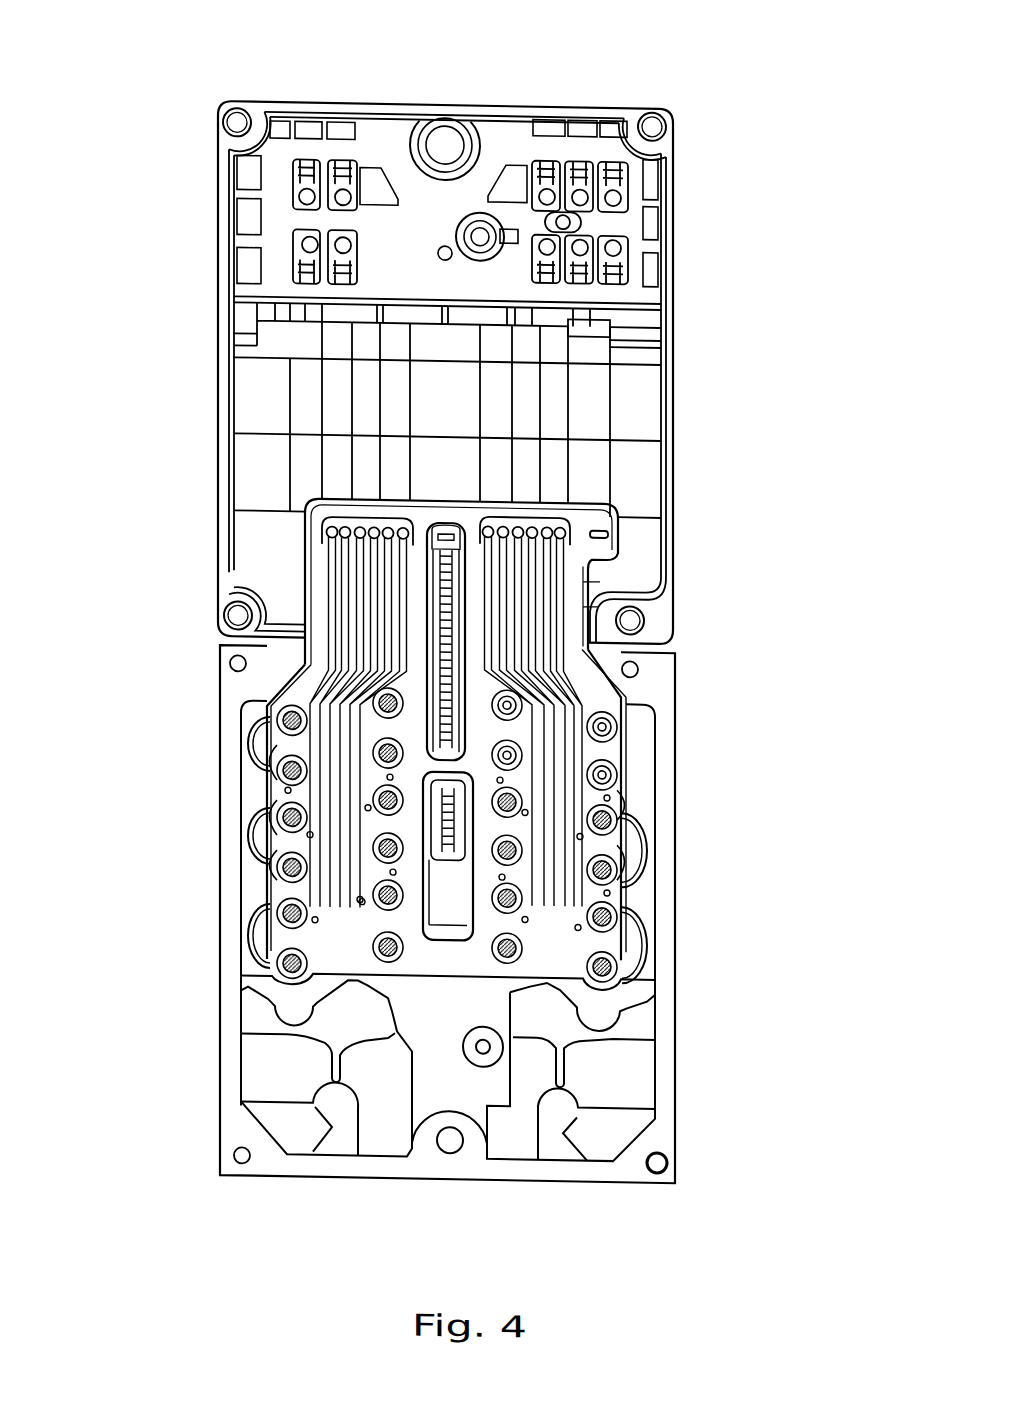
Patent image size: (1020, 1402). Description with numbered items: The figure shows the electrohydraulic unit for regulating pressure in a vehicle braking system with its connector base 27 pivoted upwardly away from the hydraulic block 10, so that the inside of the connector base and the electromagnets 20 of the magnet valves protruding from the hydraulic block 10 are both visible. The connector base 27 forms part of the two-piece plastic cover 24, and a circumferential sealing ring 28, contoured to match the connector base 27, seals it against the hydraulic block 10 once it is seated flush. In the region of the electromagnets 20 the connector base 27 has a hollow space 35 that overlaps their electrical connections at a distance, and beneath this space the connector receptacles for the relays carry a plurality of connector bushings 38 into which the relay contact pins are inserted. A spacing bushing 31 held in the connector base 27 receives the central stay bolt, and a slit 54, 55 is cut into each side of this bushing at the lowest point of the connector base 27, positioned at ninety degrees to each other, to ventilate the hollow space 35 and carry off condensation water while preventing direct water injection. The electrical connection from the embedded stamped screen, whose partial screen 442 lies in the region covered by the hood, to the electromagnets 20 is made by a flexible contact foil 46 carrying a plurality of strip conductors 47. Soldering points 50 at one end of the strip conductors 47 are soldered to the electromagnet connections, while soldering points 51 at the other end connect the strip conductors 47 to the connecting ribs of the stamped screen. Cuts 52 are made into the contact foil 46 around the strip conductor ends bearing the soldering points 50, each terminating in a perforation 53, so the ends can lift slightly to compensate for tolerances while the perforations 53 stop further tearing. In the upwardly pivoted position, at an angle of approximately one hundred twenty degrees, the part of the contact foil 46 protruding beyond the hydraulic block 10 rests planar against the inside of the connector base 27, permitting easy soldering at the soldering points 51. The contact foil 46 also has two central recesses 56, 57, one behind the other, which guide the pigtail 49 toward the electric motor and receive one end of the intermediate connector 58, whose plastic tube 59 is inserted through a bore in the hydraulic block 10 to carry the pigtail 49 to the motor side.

The hydraulic block 10 is at (675, 789).
The electromagnets 20 is at (643, 953).
The cover 24 is at (682, 266).
The connector base 27 is at (668, 321).
The sealing ring 28 is at (670, 172).
The spacing bushing 31 is at (458, 122).
The hollow space 35 is at (632, 483).
The connector bushings 38 is at (317, 158).
The second partial screen 442 is at (656, 182).
The flexible contact foil 46 is at (573, 647).
The strip conductors 47 is at (300, 792).
The pigtail 49 is at (427, 574).
The soldering points 50 is at (280, 958).
The soldering points 51 is at (562, 530).
The cuts 52 is at (285, 843).
The perforations 53 is at (288, 792).
The slit 54 is at (405, 117).
The slit 55 is at (500, 115).
The recess 56 is at (427, 538).
The recess 57 is at (423, 824).
The intermediate connector 58 is at (430, 941).
The tube 59 is at (450, 901).